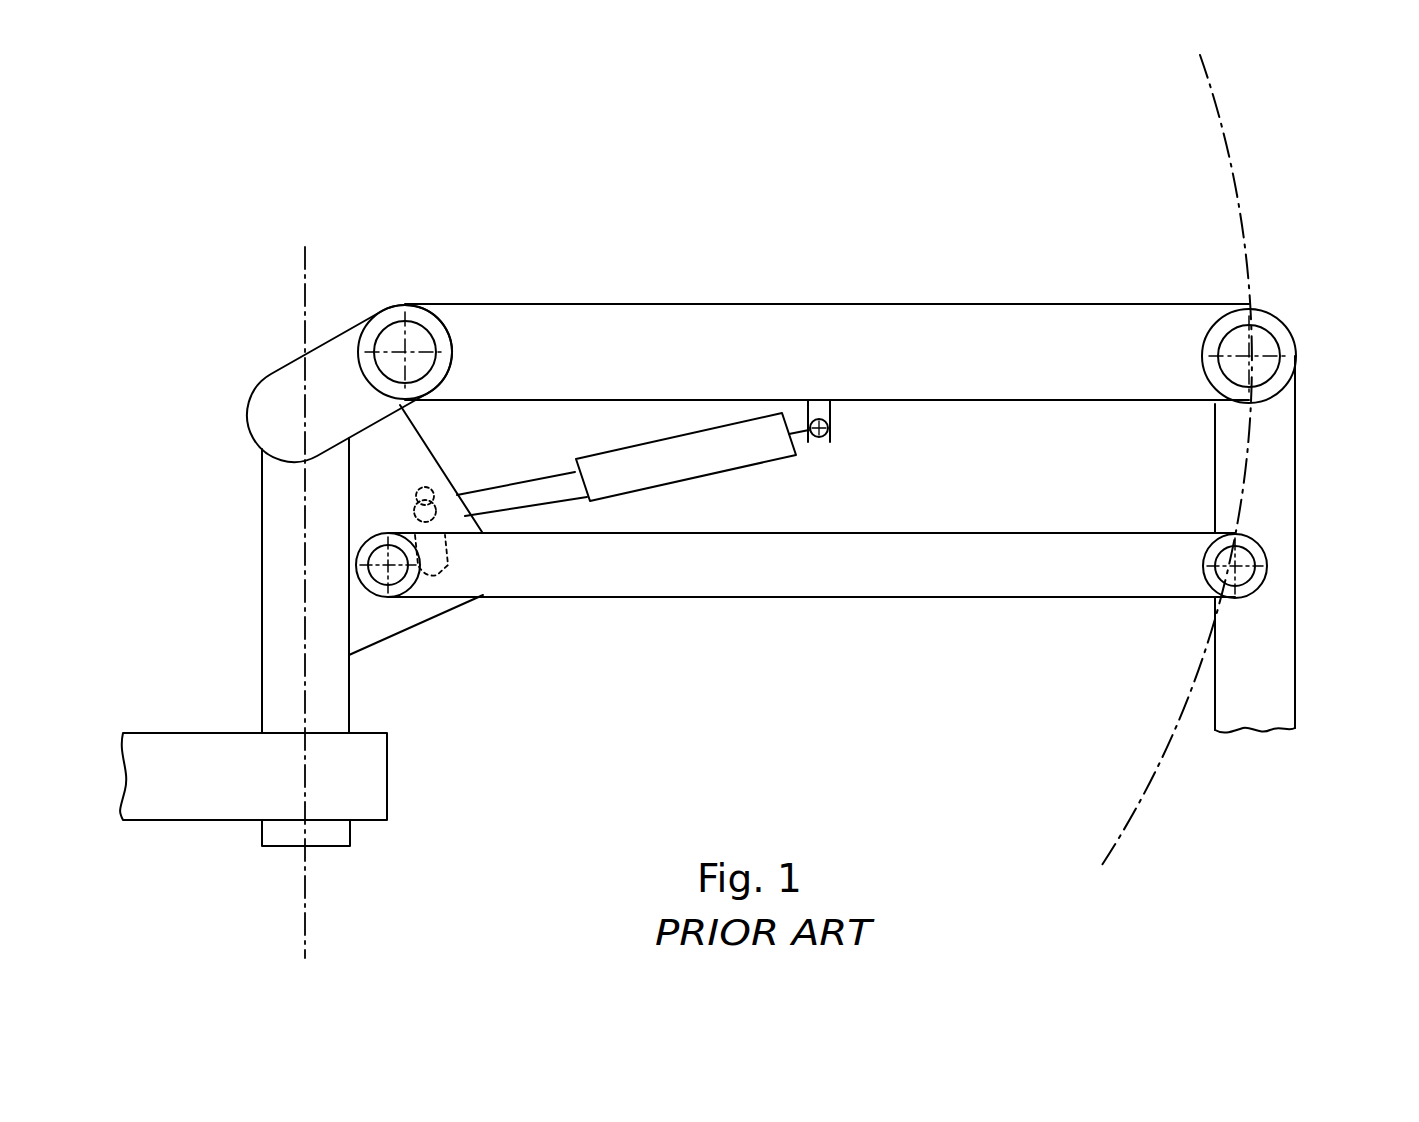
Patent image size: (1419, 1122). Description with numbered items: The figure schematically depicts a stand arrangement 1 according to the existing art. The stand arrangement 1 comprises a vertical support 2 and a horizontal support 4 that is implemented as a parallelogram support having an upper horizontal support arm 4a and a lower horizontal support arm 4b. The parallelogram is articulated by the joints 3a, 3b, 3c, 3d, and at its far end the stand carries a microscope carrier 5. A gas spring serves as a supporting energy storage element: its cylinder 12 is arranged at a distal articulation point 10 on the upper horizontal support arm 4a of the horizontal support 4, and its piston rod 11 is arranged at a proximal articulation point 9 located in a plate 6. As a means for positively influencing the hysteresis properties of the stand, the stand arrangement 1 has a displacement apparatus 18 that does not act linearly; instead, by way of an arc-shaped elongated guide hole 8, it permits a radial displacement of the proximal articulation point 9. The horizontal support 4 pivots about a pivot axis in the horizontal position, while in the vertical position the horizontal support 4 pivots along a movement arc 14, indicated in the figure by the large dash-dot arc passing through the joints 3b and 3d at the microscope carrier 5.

The stand arrangement 1 is at (352, 197).
The vertical support 2 is at (275, 573).
The joint 3a is at (415, 333).
The joint 3b is at (1260, 343).
The joint 3c is at (395, 573).
The joint 3d is at (1240, 577).
The horizontal support 4 is at (805, 240).
The upper horizontal support arm 4a is at (912, 338).
The lower horizontal support arm 4b is at (933, 565).
The microscope carrier 5 is at (1273, 488).
The plate 6 is at (370, 447).
The arc-shaped elongated guide hole 8 is at (445, 478).
The proximal articulation point 9 is at (450, 527).
The distal articulation point 10 is at (830, 423).
The piston rod 11 is at (562, 488).
The cylinder 12 is at (665, 473).
The movement arc 14 is at (1138, 780).
The displacement apparatus 18 is at (486, 633).